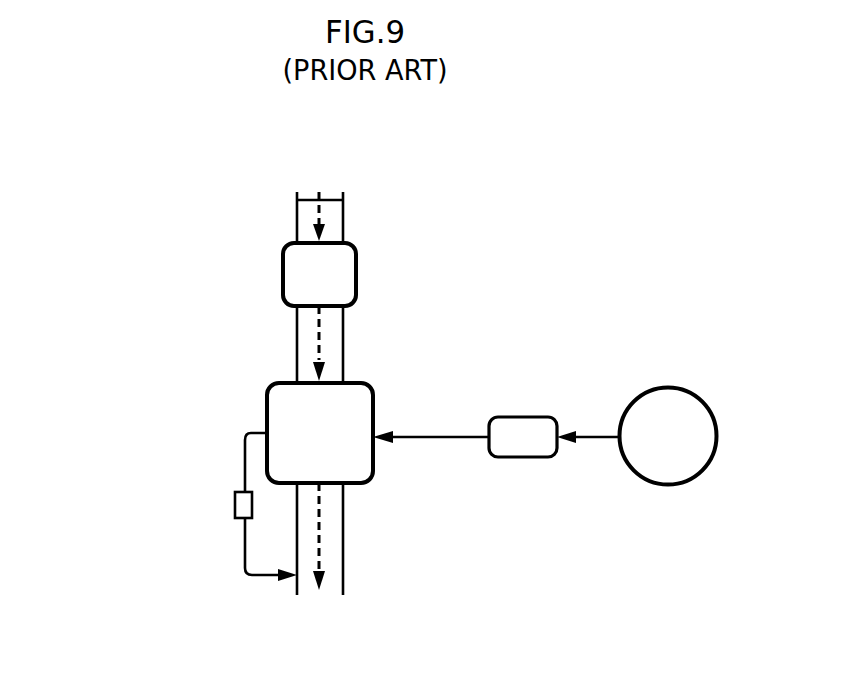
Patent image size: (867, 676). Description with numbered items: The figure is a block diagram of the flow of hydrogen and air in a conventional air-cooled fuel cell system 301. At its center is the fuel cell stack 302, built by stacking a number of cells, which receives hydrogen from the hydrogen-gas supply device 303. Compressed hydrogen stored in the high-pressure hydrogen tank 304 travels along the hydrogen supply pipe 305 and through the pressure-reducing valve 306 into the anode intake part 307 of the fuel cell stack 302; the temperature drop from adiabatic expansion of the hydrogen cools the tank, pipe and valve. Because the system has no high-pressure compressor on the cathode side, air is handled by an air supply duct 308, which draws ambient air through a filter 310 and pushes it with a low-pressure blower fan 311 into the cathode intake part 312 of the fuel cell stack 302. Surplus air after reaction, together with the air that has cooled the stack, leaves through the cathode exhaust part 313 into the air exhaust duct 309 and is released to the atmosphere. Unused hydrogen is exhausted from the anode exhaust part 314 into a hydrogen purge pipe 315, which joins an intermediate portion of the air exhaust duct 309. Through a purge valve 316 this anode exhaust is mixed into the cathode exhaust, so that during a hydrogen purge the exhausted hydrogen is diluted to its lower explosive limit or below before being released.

The air-cooled fuel cell system 301 is at (173, 257).
The fuel cell stack 302 is at (351, 400).
The hydrogen-gas supply device 303 is at (595, 362).
The high-pressure hydrogen tank 304 is at (663, 399).
The hydrogen supply pipe 305 is at (590, 440).
The pressure-reducing valve 306 is at (521, 428).
The anode intake part 307 is at (373, 434).
The air supply duct 308 is at (312, 336).
The air exhaust duct 309 is at (330, 546).
The filter 310 is at (328, 199).
The low-pressure blower fan 311 is at (341, 267).
The cathode intake part 312 is at (312, 383).
The cathode exhaust part 313 is at (330, 482).
The anode exhaust part 314 is at (267, 432).
The hydrogen purge pipe 315 is at (243, 460).
The purge valve 316 is at (235, 503).